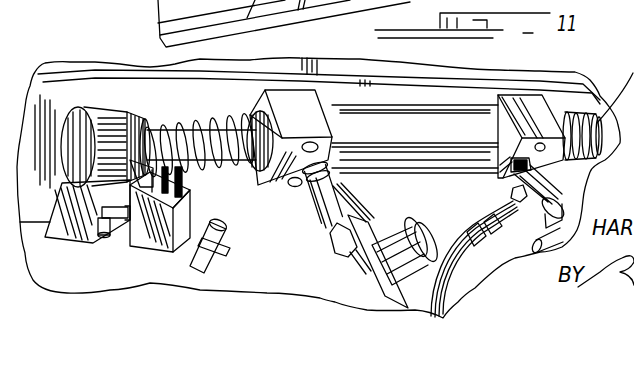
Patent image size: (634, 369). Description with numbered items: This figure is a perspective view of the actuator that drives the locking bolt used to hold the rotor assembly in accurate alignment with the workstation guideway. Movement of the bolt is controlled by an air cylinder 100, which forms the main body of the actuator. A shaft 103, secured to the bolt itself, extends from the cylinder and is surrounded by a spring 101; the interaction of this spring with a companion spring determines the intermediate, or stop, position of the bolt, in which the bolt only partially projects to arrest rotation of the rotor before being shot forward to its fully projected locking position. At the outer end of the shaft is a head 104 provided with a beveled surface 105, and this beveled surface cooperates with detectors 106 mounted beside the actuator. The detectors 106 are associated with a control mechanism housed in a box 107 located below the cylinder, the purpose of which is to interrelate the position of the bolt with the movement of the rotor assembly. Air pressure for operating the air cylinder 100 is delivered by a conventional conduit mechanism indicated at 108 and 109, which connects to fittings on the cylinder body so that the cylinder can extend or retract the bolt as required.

The air cylinder 100 is at (445, 143).
The spring 101 is at (213, 110).
The shaft 103 is at (157, 124).
The head 104 is at (102, 117).
The beveled surface 105 is at (133, 118).
The detectors 106 is at (184, 195).
The box 107 is at (133, 253).
The conduit mechanism 108 is at (350, 212).
The conduit mechanism 109 is at (484, 217).